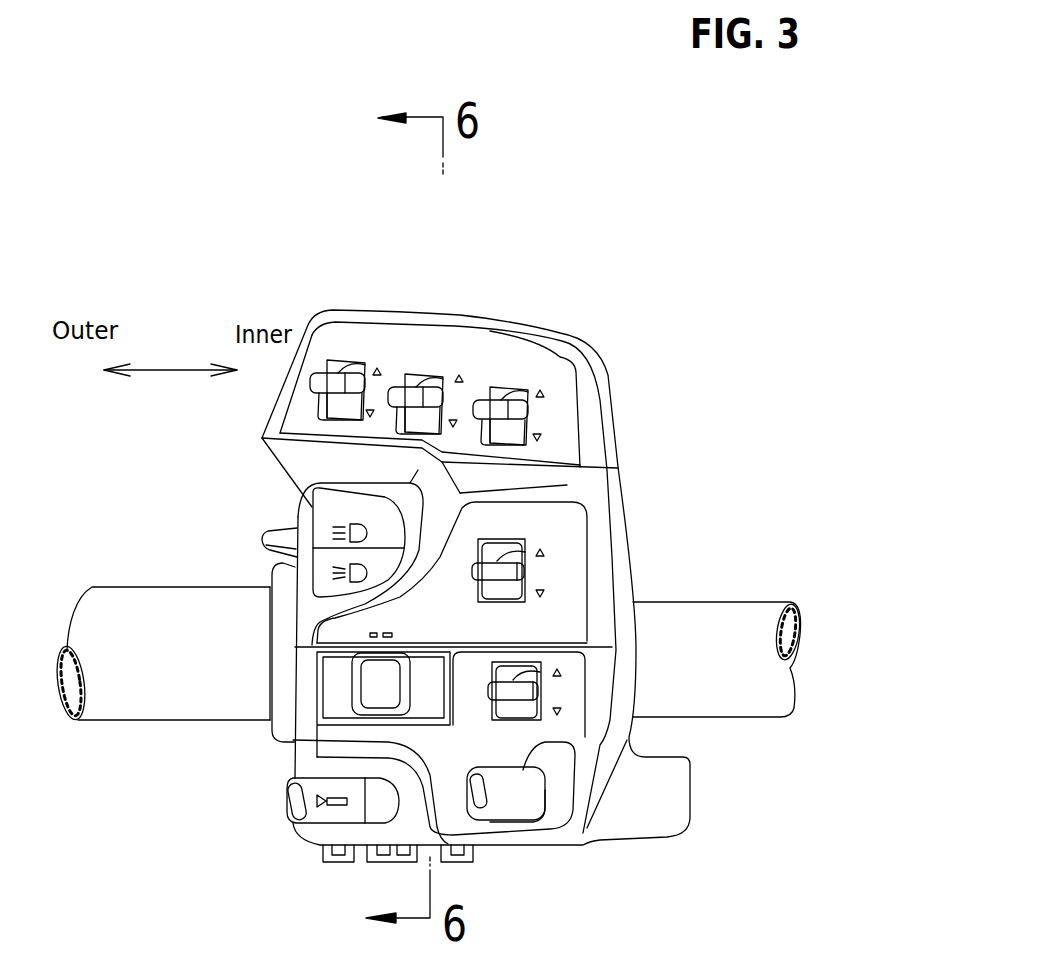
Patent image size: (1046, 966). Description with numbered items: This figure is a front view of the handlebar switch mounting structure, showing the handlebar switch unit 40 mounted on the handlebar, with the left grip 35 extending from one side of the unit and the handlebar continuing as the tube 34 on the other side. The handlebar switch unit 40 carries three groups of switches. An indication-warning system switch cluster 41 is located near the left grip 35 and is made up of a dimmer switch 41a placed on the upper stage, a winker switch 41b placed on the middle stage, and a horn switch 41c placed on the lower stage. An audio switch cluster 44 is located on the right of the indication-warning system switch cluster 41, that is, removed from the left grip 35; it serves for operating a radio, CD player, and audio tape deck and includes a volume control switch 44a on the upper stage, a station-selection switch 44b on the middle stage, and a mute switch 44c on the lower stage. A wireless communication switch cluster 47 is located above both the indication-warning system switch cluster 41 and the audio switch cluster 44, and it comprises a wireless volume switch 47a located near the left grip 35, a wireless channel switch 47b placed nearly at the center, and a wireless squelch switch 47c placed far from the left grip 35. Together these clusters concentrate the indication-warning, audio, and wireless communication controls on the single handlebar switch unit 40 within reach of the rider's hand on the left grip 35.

The handlebar (inner side) 34 is at (781, 676).
The left grip 35 is at (140, 700).
The handlebar switch unit 40 is at (589, 339).
The indication-warning system switch cluster 41 is at (265, 629).
The dimmer switch 41a is at (327, 512).
The winker switch 41b is at (367, 673).
The horn switch 41c is at (325, 782).
The audio switch cluster 44 is at (665, 687).
The volume control switch 44a is at (540, 677).
The station-selection switch 44b is at (523, 553).
The mute switch 44c is at (545, 742).
The wireless communication switch cluster 47 is at (430, 322).
The wireless volume switch 47a is at (312, 373).
The wireless channel switch 47b is at (397, 386).
The wireless squelch switch 47c is at (520, 340).